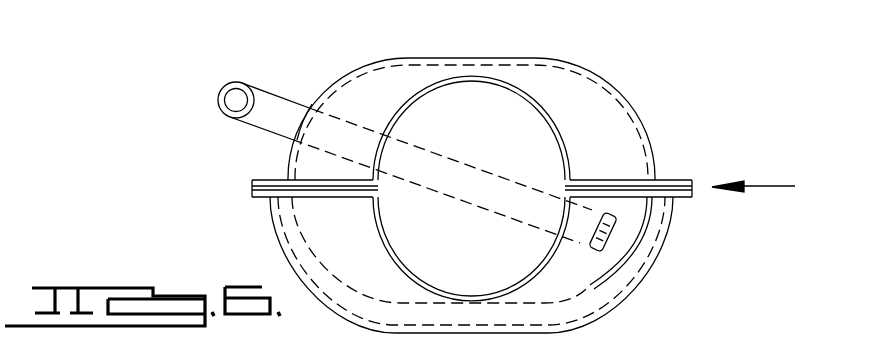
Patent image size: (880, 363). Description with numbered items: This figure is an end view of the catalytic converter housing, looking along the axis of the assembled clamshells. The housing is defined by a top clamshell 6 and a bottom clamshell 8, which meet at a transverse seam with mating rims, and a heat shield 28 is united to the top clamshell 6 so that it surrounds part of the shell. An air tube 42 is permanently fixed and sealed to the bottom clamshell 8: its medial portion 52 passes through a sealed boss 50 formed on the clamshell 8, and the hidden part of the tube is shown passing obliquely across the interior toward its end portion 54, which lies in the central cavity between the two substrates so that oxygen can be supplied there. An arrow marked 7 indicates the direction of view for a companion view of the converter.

The top clamshell 6 is at (607, 88).
The section view direction arrow 7 is at (753, 169).
The bottom clamshell 8 is at (491, 271).
The heat shield 28 is at (641, 294).
The air tube 42 is at (266, 100).
The sealed boss 50 is at (298, 135).
The medial portion 52 is at (397, 64).
The end portion 54 is at (625, 240).